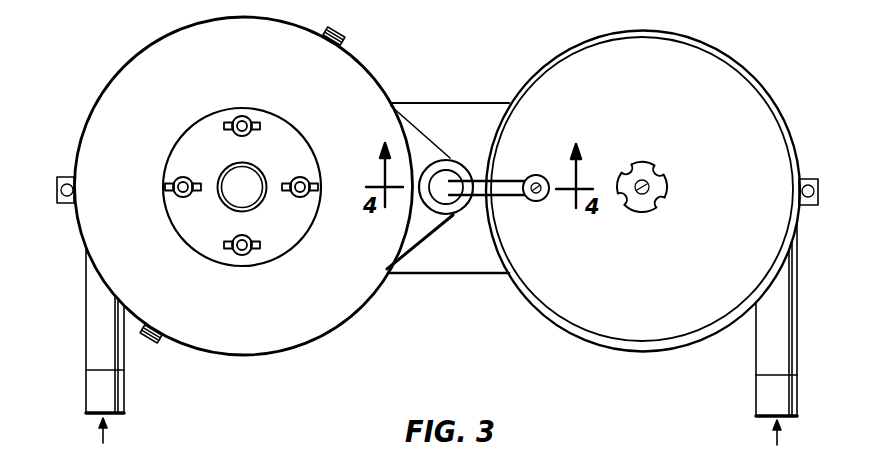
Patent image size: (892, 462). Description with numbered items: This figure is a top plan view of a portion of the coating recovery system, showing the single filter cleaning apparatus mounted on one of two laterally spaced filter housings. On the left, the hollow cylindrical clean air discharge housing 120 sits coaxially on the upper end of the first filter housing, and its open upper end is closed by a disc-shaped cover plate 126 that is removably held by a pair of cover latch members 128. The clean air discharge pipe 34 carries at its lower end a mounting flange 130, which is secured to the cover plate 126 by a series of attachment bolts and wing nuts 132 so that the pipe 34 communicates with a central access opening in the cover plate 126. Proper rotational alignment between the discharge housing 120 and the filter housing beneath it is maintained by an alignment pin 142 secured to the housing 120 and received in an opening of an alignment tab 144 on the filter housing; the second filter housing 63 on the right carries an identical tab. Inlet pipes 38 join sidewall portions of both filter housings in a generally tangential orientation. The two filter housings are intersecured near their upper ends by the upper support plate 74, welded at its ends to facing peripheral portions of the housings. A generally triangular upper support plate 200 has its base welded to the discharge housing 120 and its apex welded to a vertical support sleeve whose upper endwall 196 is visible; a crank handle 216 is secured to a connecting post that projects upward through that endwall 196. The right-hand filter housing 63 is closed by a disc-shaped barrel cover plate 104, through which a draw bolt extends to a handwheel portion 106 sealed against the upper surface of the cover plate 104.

The clean air discharge housing 120 is at (137, 57).
The cover plate 126 is at (163, 102).
The cover latch members 128 is at (343, 40).
The mounting flange 130 is at (295, 231).
The attachment bolts and wing nuts 132 is at (245, 117).
The clean air discharge pipe 34 is at (256, 171).
The alignment pin 142 is at (70, 177).
The alignment tab 144 is at (812, 179).
The inlet pipes 38 is at (85, 322).
The upper support plate 74 is at (475, 260).
The upper support plate 200 is at (407, 251).
The upper endwall 196 is at (455, 161).
The crank handle 216 is at (508, 178).
The filter housing 63 is at (757, 83).
The barrel cover plate 104 is at (659, 283).
The handwheel portion 106 is at (657, 172).